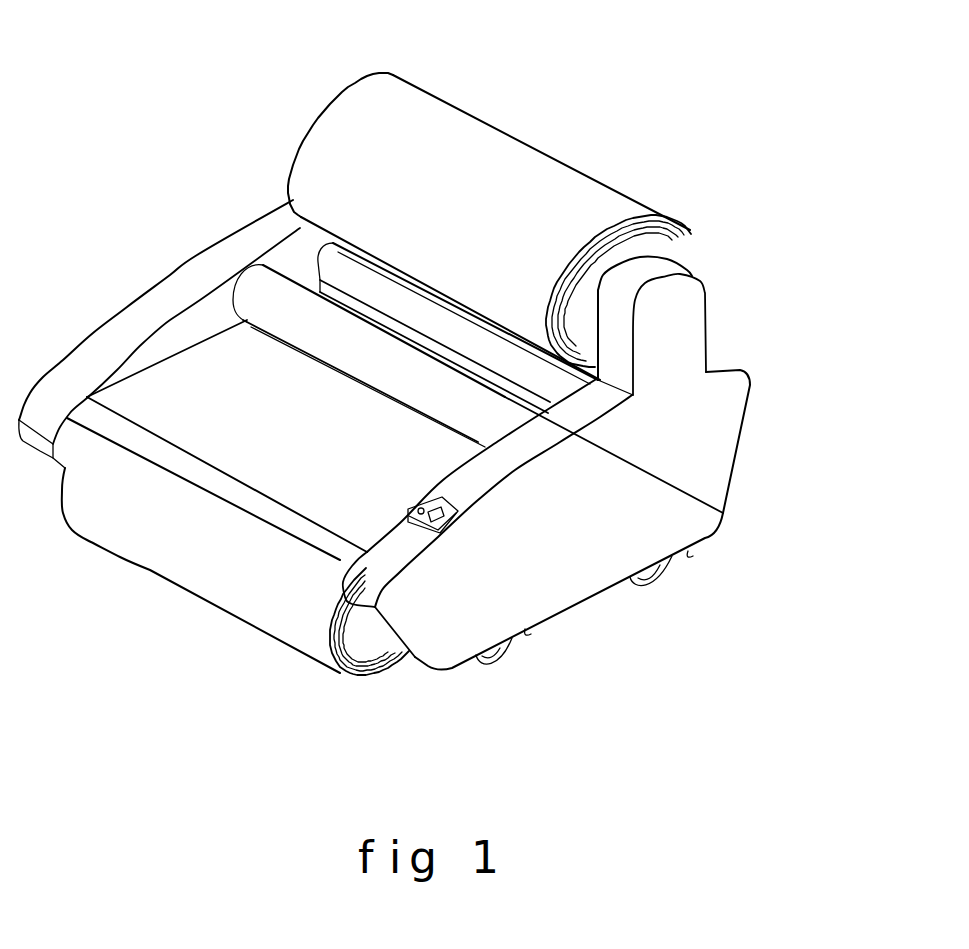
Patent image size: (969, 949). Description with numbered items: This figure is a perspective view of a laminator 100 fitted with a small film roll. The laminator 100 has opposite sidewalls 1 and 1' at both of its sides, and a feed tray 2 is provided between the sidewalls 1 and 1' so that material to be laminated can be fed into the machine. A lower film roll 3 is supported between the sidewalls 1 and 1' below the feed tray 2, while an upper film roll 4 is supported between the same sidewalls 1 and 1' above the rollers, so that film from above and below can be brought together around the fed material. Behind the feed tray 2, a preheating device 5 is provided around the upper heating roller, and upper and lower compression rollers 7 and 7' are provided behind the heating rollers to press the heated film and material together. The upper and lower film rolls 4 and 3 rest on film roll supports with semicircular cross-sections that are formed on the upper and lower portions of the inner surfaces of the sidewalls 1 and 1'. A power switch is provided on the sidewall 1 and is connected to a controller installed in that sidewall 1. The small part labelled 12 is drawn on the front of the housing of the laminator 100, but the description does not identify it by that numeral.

The laminator 100 is at (223, 143).
The sidewall 1 is at (582, 467).
The sidewall 1' is at (159, 334).
The feed tray 2 is at (332, 487).
The lower film roll 3 is at (187, 547).
The upper film roll 4 is at (540, 192).
The preheating device 5 is at (265, 295).
The upper compression roller 7 is at (400, 280).
The lower compression roller 7' is at (579, 517).
The fixing plate 12 is at (437, 535).